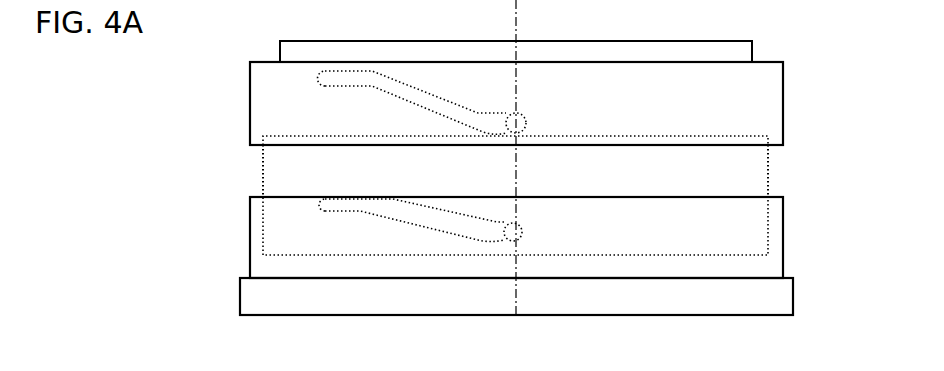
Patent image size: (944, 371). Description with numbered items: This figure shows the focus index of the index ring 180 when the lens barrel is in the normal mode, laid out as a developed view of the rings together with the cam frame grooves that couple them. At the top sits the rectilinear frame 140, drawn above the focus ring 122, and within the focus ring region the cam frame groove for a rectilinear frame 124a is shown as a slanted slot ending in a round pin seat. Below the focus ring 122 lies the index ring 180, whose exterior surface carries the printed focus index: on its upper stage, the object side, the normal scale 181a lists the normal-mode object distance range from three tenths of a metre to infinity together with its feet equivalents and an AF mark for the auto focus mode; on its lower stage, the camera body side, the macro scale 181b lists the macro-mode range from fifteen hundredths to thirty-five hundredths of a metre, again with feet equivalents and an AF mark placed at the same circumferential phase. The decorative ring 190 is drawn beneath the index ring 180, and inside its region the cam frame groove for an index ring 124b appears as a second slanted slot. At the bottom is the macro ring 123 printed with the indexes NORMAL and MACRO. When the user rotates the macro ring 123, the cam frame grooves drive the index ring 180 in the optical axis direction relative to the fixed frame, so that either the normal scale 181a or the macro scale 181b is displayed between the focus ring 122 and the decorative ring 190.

The focus ring 122 is at (767, 62).
The rectilinear frame 140 is at (622, 41).
The cam frame groove for a rectilinear frame 124a is at (430, 222).
The cam frame groove for an index ring 124b is at (422, 92).
The index ring 180 is at (520, 171).
The normal scale 181a is at (278, 162).
The macro scale 181b is at (270, 217).
The decorative ring 190 is at (518, 224).
The macro ring 123 is at (795, 300).